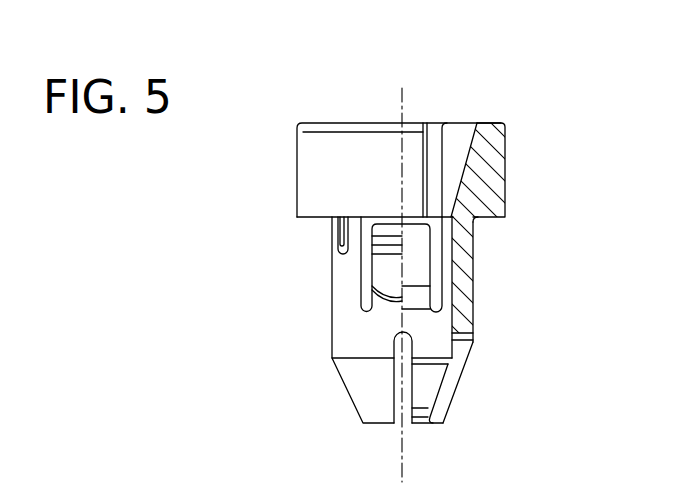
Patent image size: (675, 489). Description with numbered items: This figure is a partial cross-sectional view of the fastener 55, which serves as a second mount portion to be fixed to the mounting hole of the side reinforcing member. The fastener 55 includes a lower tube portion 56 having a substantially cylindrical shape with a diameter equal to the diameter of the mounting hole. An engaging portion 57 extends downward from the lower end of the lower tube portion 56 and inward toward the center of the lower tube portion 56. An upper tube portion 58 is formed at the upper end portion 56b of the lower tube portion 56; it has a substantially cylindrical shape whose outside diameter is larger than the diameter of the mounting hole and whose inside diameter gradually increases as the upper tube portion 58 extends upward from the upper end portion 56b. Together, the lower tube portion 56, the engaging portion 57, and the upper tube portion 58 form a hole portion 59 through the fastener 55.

The fastener 55 is at (400, 244).
The lower tube portion 56 is at (465, 288).
The upper end portion of the lower tube portion 56b is at (465, 222).
The engaging portion 57 is at (438, 420).
The upper tube portion 58 is at (498, 167).
The hole portion 59 is at (467, 165).